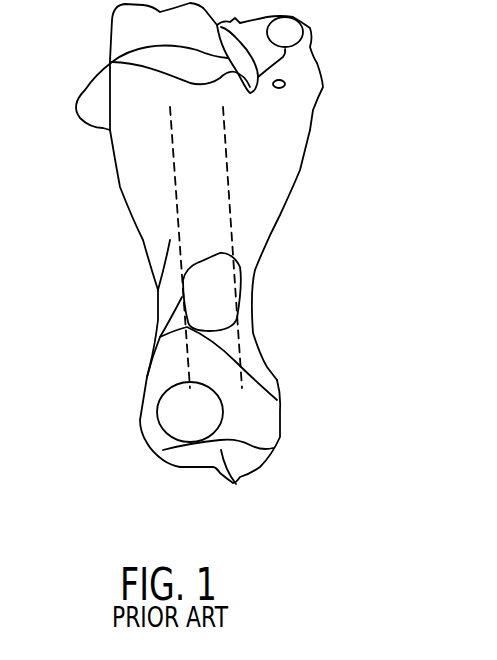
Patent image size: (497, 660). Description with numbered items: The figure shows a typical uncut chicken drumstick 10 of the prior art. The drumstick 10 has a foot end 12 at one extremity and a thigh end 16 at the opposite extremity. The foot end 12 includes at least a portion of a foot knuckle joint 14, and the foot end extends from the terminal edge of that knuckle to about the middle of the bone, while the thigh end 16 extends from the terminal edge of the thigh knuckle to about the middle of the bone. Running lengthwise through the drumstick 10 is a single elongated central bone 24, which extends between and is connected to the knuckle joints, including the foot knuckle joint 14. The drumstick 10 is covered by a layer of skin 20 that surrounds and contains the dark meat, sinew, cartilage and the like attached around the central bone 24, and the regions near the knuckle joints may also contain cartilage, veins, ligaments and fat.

The drumstick 10 is at (373, 134).
The foot end 12 is at (253, 390).
The foot knuckle joint 14 is at (210, 447).
The thigh end 16 is at (307, 61).
The layer of skin 20 is at (280, 182).
The central bone 24 is at (247, 297).